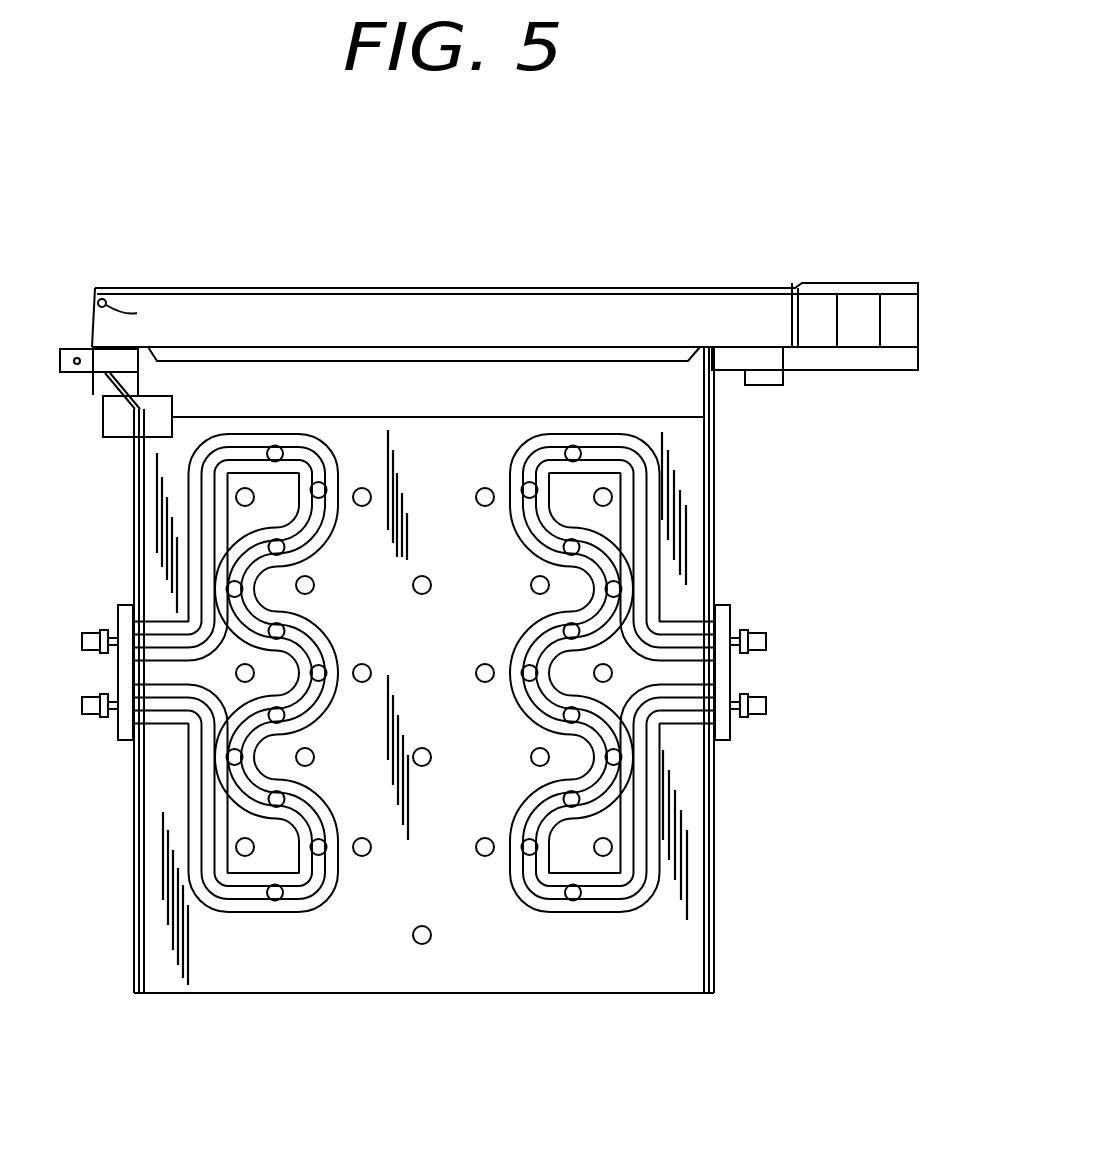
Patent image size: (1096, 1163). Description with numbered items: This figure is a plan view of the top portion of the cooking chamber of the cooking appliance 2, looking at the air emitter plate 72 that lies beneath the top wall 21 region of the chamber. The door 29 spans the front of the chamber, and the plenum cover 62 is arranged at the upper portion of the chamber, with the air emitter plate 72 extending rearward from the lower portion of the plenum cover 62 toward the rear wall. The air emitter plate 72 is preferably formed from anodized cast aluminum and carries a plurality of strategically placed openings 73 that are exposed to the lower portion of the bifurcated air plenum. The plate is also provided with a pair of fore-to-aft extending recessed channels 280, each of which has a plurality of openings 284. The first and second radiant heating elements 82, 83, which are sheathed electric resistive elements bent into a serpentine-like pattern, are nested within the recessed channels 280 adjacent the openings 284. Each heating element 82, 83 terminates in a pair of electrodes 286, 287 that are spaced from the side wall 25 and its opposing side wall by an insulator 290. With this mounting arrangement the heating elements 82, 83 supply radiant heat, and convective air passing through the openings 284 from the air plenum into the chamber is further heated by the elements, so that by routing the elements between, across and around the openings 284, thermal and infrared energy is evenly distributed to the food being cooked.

The cooking appliance 2 is at (294, 1038).
The top wall 21 is at (688, 393).
The side wall 25 is at (148, 918).
The door 29 is at (228, 288).
The plenum cover 62 is at (442, 416).
The air emitter plate 72 is at (165, 970).
The openings 73 is at (425, 922).
The first radiant heating element 82 is at (538, 883).
The second radiant heating element 83 is at (310, 828).
The recessed channels 280 is at (424, 705).
The openings 284 is at (320, 650).
The electrode 286 is at (100, 718).
The electrode 287 is at (90, 630).
The insulator 290 is at (125, 605).